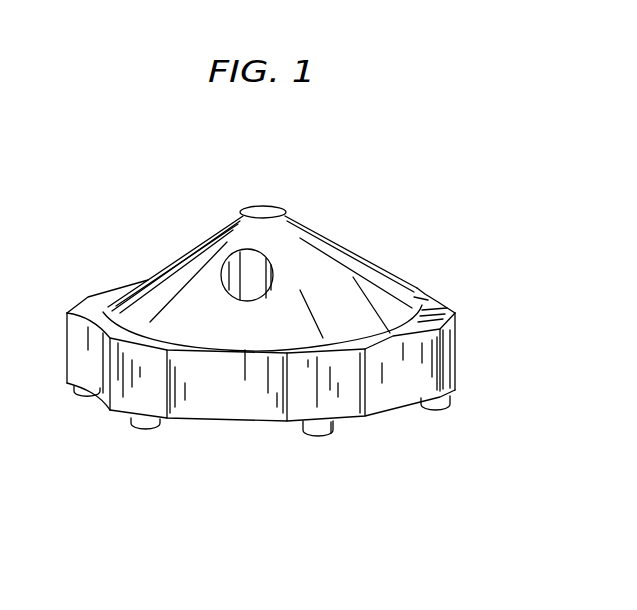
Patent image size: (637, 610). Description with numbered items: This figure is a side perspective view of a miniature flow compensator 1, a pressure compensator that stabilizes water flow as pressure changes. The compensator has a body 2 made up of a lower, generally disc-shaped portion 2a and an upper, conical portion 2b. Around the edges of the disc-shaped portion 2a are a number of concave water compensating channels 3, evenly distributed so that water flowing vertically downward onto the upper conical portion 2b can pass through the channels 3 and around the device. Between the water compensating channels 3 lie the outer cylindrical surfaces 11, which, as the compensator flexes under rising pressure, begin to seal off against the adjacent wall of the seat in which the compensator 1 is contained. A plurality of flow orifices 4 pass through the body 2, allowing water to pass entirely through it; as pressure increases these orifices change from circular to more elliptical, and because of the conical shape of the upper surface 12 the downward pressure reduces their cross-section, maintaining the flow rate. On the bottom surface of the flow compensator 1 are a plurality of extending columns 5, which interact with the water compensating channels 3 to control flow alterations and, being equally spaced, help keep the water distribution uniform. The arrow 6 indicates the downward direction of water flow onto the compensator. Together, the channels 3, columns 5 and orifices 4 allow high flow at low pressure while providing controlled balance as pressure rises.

The flow compensator 1 is at (271, 181).
The body 2 is at (297, 234).
The lower disc-shaped portion 2a is at (114, 400).
The upper conical portion 2b is at (147, 287).
The water compensating channels 3 is at (204, 410).
The flow orifices 4 is at (229, 270).
The extending columns 5 is at (322, 428).
The direction arrow 6 is at (268, 471).
The outer cylindrical surfaces 11 is at (447, 352).
The upper surface 12 is at (365, 280).